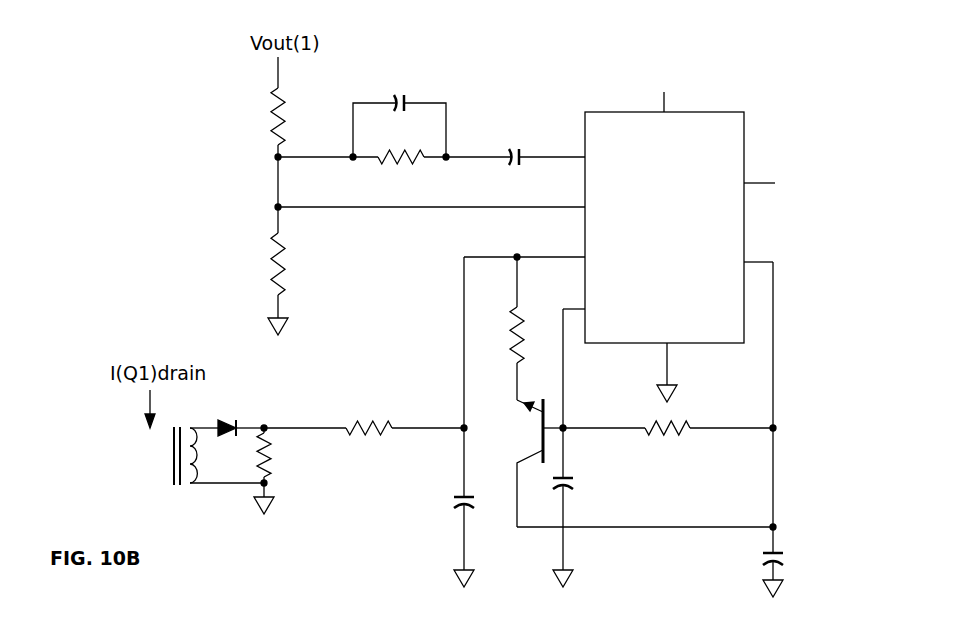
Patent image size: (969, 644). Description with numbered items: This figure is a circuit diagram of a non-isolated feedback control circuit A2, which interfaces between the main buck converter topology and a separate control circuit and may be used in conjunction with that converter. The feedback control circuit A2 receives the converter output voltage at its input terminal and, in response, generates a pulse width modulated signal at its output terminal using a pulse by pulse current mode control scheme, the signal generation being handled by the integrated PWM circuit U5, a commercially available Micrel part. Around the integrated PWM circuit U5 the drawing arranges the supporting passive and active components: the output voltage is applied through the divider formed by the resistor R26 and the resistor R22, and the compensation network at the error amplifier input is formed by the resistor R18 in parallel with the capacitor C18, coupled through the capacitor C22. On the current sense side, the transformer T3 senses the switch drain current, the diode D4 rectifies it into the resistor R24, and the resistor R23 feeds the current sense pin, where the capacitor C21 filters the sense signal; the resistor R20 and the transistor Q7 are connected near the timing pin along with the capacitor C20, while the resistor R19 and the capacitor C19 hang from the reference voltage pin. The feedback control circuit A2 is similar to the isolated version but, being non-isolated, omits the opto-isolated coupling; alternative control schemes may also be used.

The resistor R26 is at (251, 122).
The resistor R22 is at (253, 284).
The resistor R18 is at (401, 143).
The capacitor C18 is at (399, 111).
The capacitor C22 is at (541, 142).
The integrated PWM circuit U5 is at (706, 236).
The non-isolated feedback control circuit A2 is at (772, 135).
The resistor R20 is at (499, 328).
The transistor Q7 is at (540, 445).
The capacitor C21 is at (448, 422).
The capacitor C20 is at (584, 448).
The resistor R19 is at (709, 447).
The capacitor C19 is at (747, 429).
The current transformer T3 is at (200, 456).
The diode D4 is at (239, 412).
The resistor R24 is at (286, 471).
The resistor R23 is at (364, 447).